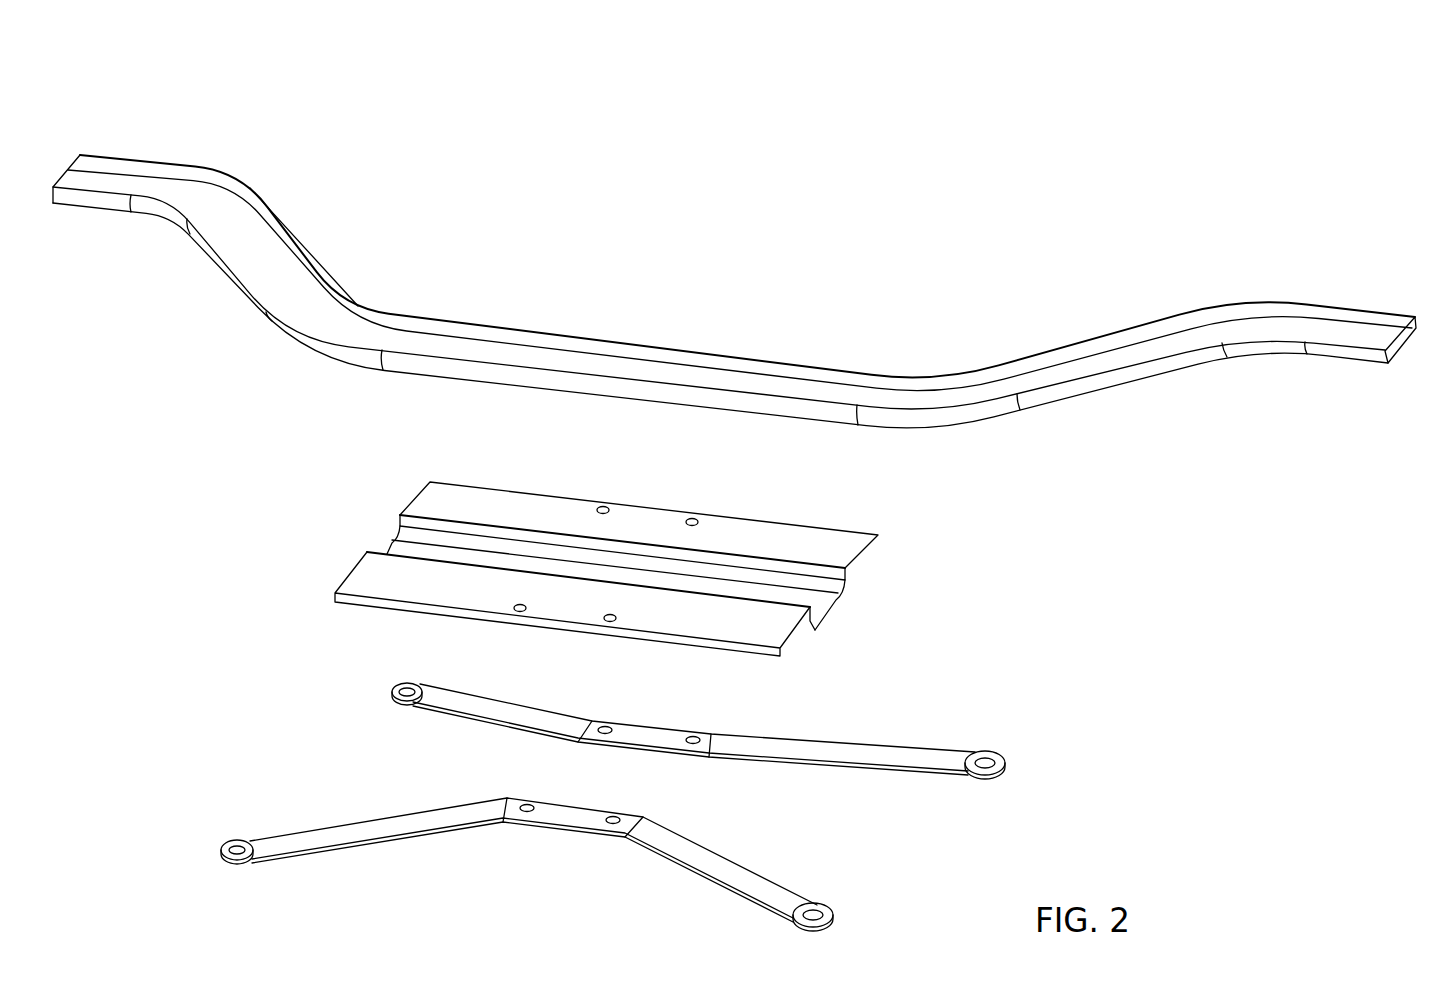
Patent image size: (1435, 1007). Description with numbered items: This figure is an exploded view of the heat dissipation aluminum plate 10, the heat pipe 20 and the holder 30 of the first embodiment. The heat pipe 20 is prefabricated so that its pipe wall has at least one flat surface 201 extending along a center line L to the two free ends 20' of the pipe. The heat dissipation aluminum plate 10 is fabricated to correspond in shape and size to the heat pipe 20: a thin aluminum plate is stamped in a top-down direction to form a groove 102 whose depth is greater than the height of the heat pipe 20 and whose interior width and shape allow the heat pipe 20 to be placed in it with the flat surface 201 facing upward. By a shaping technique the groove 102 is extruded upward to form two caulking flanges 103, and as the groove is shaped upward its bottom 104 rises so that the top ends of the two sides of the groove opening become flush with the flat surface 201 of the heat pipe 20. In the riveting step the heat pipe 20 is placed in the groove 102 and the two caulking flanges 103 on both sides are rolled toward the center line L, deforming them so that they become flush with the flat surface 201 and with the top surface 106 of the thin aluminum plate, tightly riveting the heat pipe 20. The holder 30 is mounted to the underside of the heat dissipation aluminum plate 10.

The heat pipe 20 is at (734, 291).
The free ends 20' is at (734, 201).
The flat surface 201 is at (1345, 314).
The center line L is at (758, 375).
The heat dissipation aluminum plate 10 is at (648, 565).
The top surface 106 is at (780, 548).
The caulking flanges 103 is at (862, 563).
The groove 102 is at (800, 593).
The bottom of the groove 104 is at (837, 598).
The holder 30 is at (1003, 768).